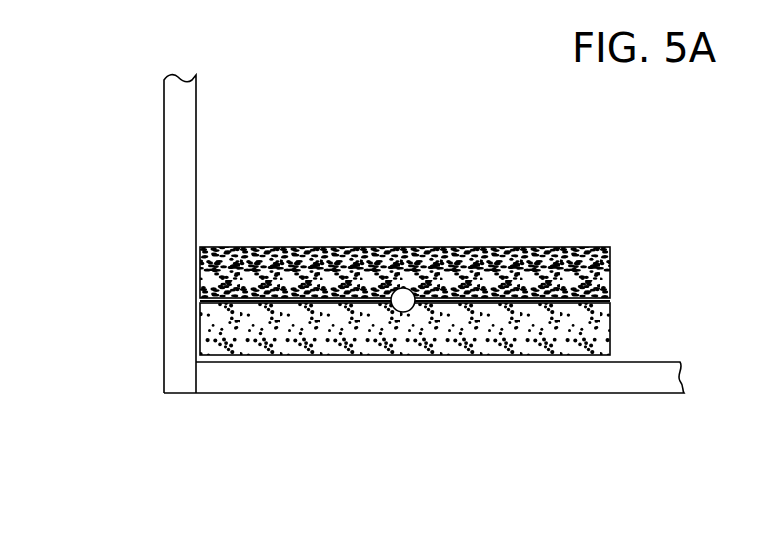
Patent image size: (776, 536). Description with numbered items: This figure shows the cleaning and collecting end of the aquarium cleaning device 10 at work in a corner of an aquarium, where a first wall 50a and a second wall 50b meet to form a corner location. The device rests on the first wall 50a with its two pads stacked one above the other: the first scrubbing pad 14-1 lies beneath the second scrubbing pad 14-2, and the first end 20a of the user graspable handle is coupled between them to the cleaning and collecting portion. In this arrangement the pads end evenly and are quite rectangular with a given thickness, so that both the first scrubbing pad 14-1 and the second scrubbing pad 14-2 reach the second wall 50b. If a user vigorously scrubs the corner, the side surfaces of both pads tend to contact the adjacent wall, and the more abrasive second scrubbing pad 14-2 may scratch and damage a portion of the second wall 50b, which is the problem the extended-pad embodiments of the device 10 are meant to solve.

The aquarium cleaning device 10 is at (627, 220).
The first scrubbing pad 14-1 is at (602, 327).
The second scrubbing pad 14-2 is at (274, 253).
The first end of handle 20a is at (403, 290).
The first wall 50a is at (426, 393).
The second wall 50b is at (167, 182).